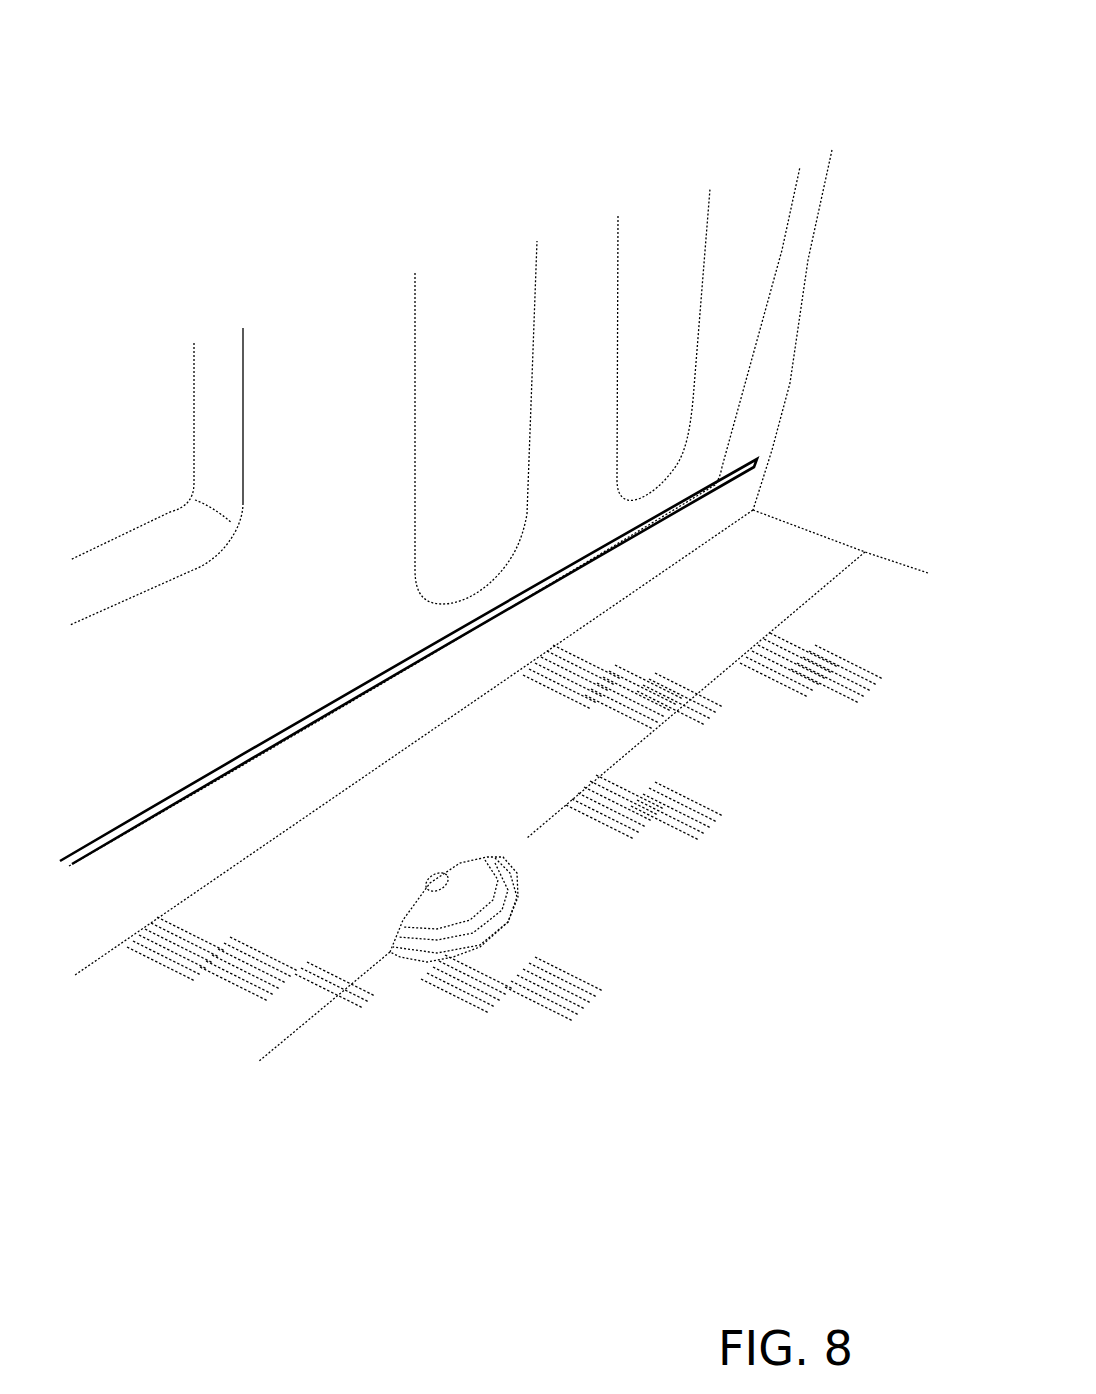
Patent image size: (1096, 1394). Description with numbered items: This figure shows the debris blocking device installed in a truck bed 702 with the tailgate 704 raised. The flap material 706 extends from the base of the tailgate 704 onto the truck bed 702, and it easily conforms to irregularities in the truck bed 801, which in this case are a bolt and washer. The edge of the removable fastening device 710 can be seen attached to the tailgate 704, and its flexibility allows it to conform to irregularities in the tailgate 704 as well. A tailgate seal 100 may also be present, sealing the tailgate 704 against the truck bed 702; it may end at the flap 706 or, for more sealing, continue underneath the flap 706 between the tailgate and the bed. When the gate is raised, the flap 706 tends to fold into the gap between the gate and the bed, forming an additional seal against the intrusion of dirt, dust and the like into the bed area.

The tailgate seal 100 is at (810, 170).
The tailgate 704 is at (360, 542).
The removable fastening device 710 is at (238, 758).
The flap material 706 is at (540, 764).
The truck bed 702 is at (635, 887).
The irregularities in the truck bed 801 is at (428, 890).